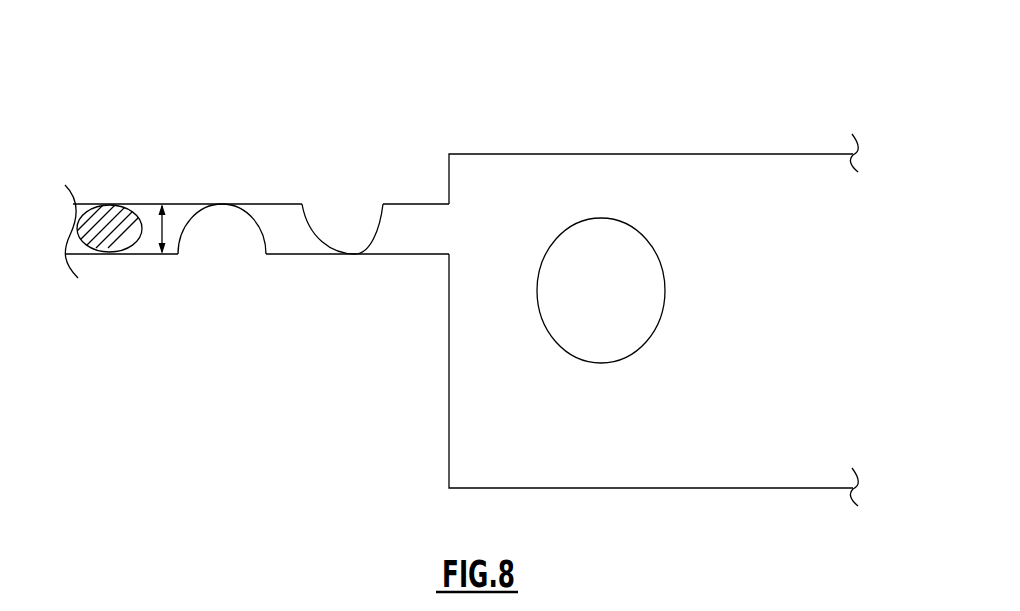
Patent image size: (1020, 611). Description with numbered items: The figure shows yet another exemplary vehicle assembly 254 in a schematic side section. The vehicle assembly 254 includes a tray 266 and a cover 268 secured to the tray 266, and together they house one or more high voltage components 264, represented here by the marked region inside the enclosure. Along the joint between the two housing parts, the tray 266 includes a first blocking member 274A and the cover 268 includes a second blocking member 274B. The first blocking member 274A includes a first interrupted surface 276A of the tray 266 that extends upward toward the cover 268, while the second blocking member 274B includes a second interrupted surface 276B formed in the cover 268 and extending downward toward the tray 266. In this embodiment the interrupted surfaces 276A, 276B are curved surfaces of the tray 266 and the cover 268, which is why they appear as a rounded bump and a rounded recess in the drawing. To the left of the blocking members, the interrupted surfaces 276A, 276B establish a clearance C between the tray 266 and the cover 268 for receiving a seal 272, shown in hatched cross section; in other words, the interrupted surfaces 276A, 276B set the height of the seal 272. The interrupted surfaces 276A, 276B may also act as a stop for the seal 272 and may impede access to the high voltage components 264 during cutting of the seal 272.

The vehicle assembly 254 is at (606, 274).
The high voltage components 264 is at (655, 248).
The tray 266 is at (448, 394).
The cover 268 is at (488, 154).
The seal 272 is at (110, 246).
The first blocking member 274A is at (245, 270).
The second blocking member 274B is at (367, 223).
The first interrupted surface 276A is at (202, 214).
The second interrupted surface 276B is at (355, 256).
The clearance C is at (164, 230).